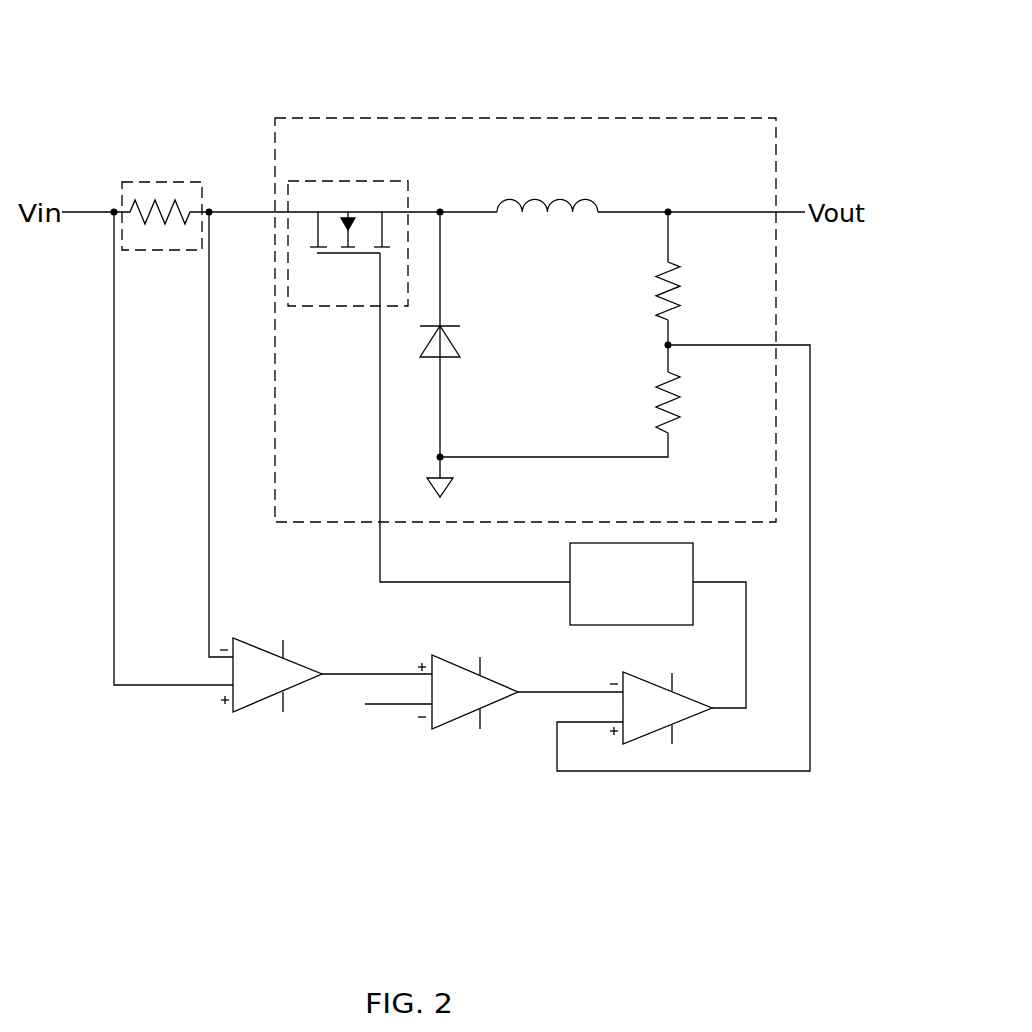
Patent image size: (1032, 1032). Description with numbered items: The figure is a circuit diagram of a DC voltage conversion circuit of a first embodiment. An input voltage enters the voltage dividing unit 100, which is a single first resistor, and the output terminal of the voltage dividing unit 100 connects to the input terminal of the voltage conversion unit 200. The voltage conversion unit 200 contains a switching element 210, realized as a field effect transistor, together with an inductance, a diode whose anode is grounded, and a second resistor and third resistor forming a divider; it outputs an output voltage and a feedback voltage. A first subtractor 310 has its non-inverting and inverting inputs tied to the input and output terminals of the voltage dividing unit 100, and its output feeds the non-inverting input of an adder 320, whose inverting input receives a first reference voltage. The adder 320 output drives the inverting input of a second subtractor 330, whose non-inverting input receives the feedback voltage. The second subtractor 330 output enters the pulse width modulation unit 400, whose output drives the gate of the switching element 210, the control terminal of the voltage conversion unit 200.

The voltage dividing unit 100 is at (162, 182).
The voltage conversion unit 200 is at (662, 118).
The switching element 210 is at (317, 181).
The first subtractor 310 is at (254, 703).
The adder 320 is at (452, 721).
The second subtractor 330 is at (643, 737).
The pulse width modulation unit 400 is at (693, 548).